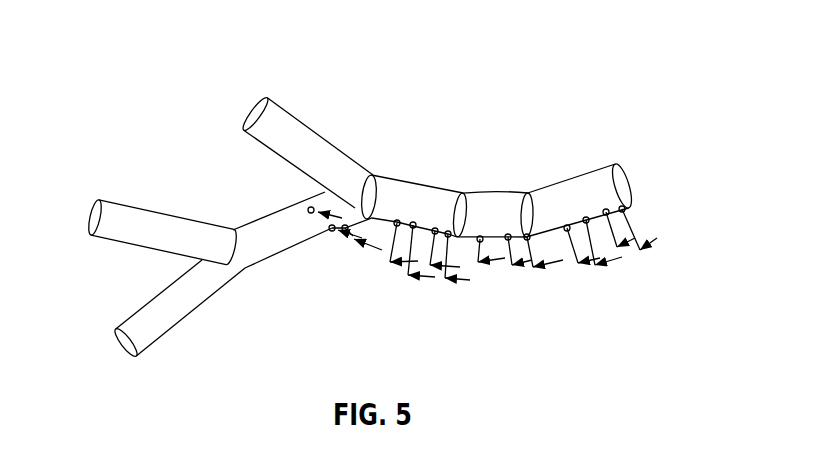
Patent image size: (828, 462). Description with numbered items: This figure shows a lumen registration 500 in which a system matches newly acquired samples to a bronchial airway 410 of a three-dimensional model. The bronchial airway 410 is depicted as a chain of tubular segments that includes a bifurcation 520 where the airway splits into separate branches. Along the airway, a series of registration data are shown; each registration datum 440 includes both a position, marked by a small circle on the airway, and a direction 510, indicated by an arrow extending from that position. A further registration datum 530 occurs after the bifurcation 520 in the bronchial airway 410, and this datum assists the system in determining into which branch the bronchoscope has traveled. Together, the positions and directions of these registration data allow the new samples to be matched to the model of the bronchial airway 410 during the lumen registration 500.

The lumen registration 500 is at (157, 79).
The bronchial airway 410 is at (300, 120).
The bifurcation 520 is at (325, 192).
The registration datum 530 is at (329, 231).
The registration datum 440 is at (390, 259).
The direction 510 is at (426, 282).